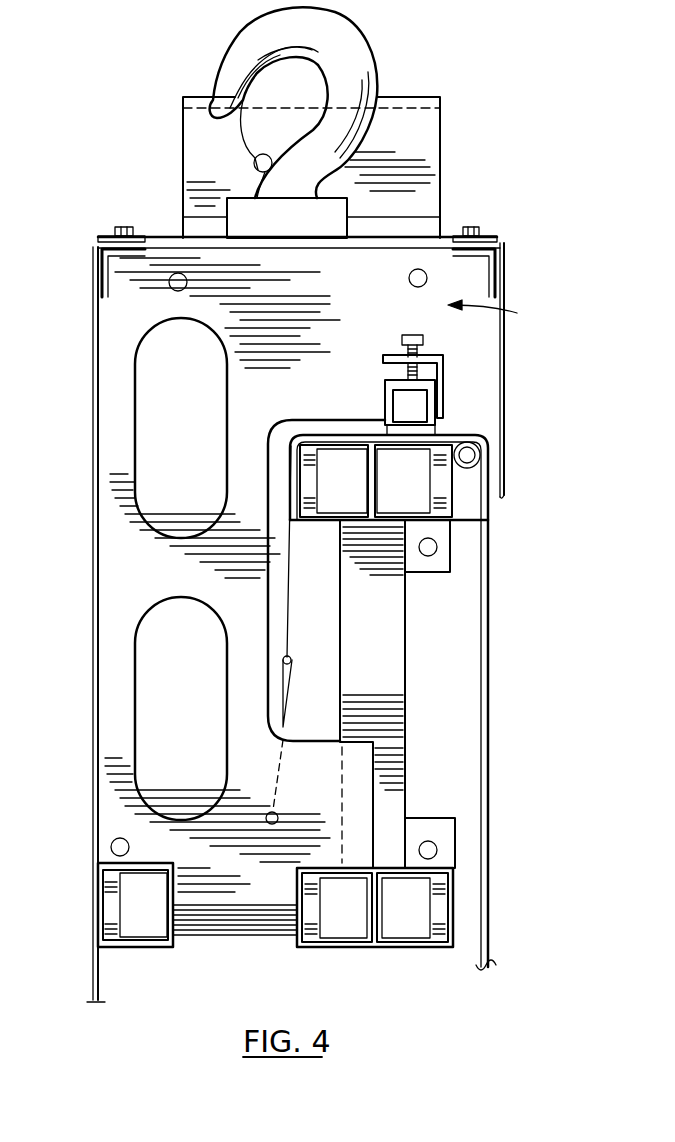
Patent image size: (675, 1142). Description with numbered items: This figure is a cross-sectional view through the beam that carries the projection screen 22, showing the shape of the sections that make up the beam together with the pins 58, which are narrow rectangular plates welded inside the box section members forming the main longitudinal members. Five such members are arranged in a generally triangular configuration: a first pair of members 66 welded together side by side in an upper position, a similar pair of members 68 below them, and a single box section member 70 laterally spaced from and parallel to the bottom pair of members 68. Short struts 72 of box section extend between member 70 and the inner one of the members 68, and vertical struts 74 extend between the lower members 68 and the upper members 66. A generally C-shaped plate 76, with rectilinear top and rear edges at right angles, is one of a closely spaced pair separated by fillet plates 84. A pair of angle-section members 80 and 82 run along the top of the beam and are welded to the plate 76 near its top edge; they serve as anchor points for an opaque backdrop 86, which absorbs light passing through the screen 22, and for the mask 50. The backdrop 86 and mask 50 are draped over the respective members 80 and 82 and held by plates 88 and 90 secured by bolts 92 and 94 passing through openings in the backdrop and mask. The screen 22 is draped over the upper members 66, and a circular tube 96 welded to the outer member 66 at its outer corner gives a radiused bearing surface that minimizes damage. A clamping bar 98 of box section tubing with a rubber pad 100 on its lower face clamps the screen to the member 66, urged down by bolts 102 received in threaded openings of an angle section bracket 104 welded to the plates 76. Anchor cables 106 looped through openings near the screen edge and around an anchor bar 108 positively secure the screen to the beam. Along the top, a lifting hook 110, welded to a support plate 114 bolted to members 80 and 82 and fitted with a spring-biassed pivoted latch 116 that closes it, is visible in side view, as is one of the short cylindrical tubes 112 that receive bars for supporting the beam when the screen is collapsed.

The screen 22 is at (487, 617).
The mask 50 is at (505, 458).
The pins 58 is at (112, 933).
The first pair of members 66 is at (392, 518).
The pair of members 68 is at (398, 872).
The single box section member 70 is at (102, 890).
The short struts 72 is at (250, 923).
The vertical struts 74 is at (379, 625).
The plates 76 is at (494, 314).
The angle-section member 80 is at (100, 276).
The angle-section member 82 is at (495, 278).
The fillet plates 84 is at (447, 838).
The backdrop 86 is at (95, 978).
The plate 88 is at (108, 237).
The plate 90 is at (497, 242).
The bolts 92 is at (125, 226).
The bolts 94 is at (473, 225).
The circular tube 96 is at (468, 470).
The clamping bar 98 is at (387, 395).
The rubber pad 100 is at (472, 438).
The bolts 102 is at (423, 337).
The angle section bracket 104 is at (440, 375).
The anchor cables 106 is at (285, 723).
The anchor bar 108 is at (278, 813).
The lifting hooks 110 is at (350, 57).
The short cylindrical tubes 112 is at (430, 125).
The support plate 114 is at (387, 243).
The pivoted latch 116 is at (243, 138).